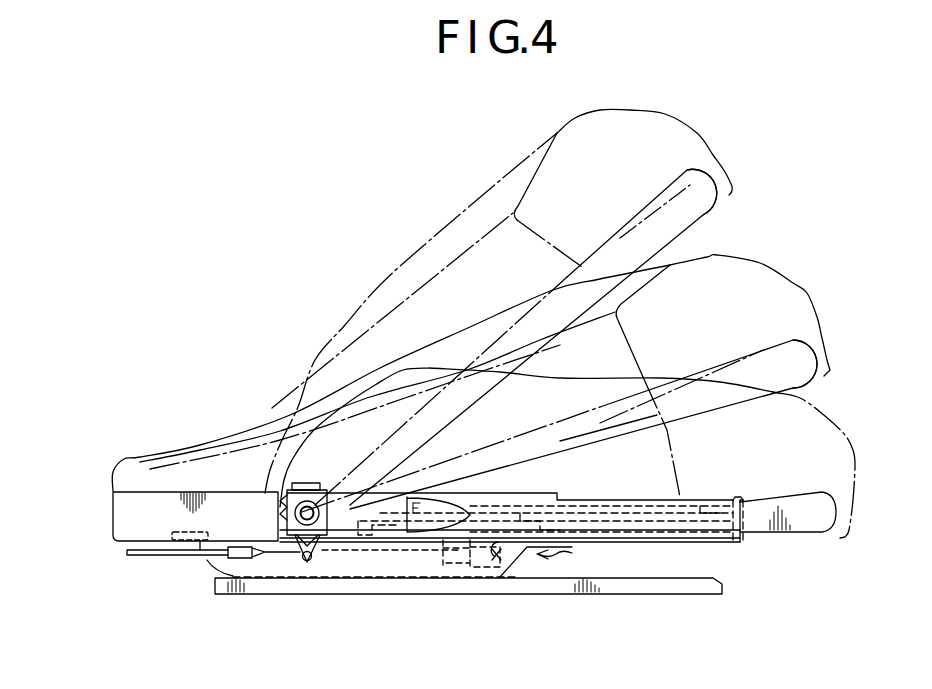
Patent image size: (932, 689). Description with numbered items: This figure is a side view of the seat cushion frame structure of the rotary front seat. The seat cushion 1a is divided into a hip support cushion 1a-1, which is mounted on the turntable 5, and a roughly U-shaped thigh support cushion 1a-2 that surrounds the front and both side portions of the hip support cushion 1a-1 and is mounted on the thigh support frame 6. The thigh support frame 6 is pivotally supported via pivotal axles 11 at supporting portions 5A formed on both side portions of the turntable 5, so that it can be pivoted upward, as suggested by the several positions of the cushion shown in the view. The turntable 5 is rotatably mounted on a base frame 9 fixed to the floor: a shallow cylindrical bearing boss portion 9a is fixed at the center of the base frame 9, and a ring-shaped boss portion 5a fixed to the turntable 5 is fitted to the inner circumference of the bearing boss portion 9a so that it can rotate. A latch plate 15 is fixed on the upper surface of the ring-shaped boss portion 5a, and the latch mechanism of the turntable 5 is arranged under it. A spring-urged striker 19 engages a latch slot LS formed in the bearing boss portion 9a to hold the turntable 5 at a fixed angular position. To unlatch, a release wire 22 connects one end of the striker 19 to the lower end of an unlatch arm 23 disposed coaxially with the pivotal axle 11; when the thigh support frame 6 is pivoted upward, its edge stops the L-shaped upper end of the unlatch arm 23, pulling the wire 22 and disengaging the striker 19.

The seat cushion 1a is at (432, 198).
The hip support cushion 1a-1 is at (273, 497).
The thigh support cushion 1a-2 is at (897, 414).
The turntable 5 is at (162, 473).
The supporting portion 5A is at (235, 502).
The ring-shaped boss portion 5a is at (173, 532).
The thigh support frame 6 is at (675, 228).
The base frame 9 is at (668, 586).
The bearing boss portion 9a is at (207, 568).
The pivotal axle 11 is at (320, 507).
The latch plate 15 is at (372, 438).
The striker 19 is at (518, 577).
The release wire 22 is at (128, 558).
The unlatch arm 23 is at (313, 562).
The latch slot LS is at (571, 560).